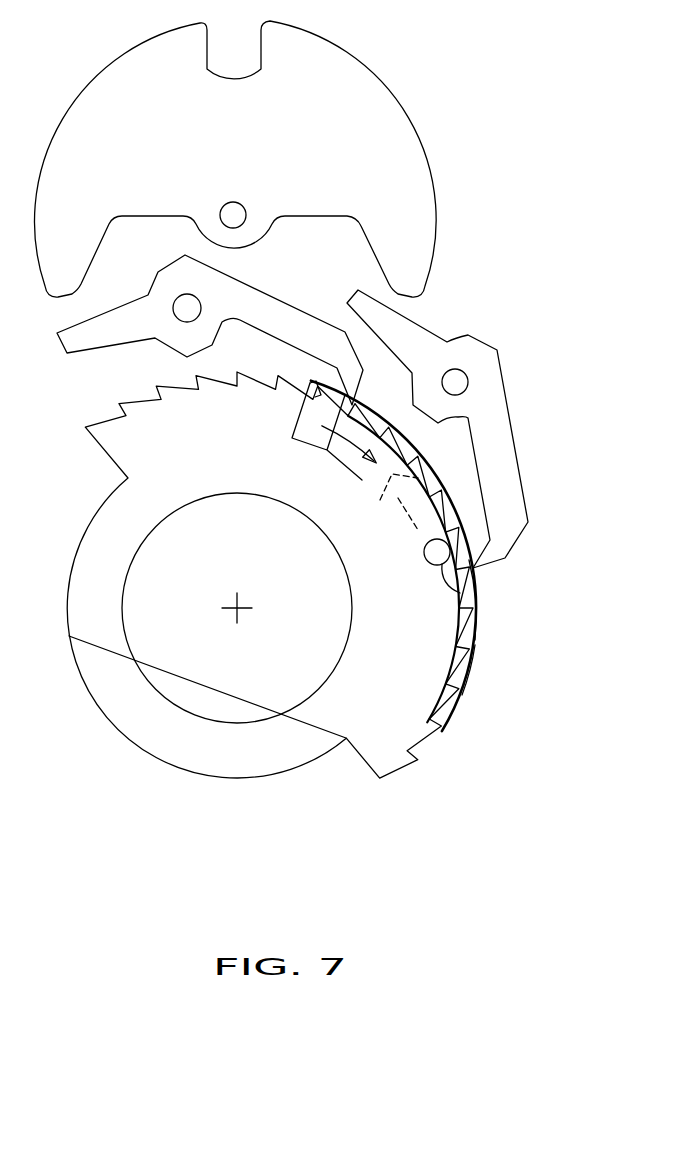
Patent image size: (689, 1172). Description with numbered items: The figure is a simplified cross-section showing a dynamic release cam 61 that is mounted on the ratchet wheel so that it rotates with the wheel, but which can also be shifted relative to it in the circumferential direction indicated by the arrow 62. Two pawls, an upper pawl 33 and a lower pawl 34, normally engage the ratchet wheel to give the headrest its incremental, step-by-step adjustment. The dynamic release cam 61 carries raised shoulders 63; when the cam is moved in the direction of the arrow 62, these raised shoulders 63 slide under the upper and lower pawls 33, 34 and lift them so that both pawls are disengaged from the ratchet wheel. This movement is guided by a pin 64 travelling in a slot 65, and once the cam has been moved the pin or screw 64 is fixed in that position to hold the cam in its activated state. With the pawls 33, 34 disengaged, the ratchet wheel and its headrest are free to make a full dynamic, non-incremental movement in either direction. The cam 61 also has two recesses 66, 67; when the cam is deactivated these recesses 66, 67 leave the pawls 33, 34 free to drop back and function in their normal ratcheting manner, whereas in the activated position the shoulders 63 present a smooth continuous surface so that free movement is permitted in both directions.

The upper pawl 33 is at (293, 297).
The lower pawl 34 is at (498, 384).
The dynamic release cam 61 is at (423, 682).
The arrow 62 is at (323, 450).
The raised shoulders 63 is at (458, 526).
The pin 64 is at (477, 597).
The slot 65 is at (392, 497).
The recess 66 is at (423, 457).
The recess 67 is at (472, 670).